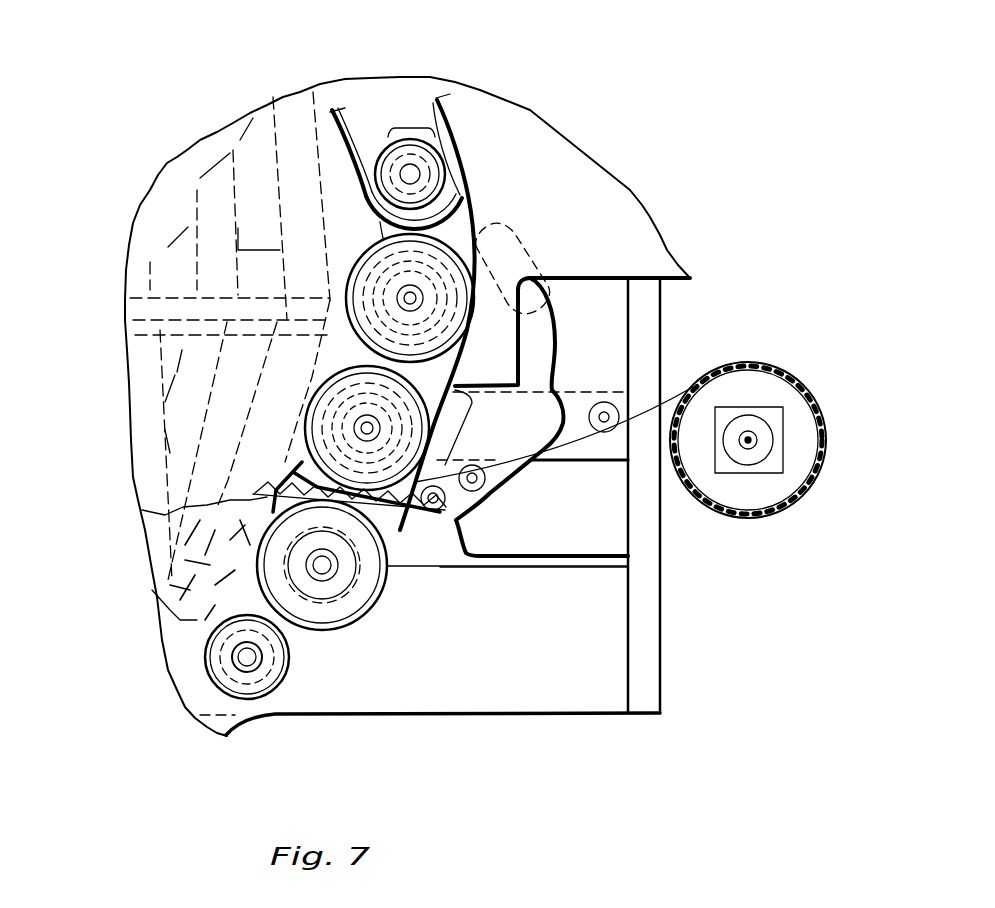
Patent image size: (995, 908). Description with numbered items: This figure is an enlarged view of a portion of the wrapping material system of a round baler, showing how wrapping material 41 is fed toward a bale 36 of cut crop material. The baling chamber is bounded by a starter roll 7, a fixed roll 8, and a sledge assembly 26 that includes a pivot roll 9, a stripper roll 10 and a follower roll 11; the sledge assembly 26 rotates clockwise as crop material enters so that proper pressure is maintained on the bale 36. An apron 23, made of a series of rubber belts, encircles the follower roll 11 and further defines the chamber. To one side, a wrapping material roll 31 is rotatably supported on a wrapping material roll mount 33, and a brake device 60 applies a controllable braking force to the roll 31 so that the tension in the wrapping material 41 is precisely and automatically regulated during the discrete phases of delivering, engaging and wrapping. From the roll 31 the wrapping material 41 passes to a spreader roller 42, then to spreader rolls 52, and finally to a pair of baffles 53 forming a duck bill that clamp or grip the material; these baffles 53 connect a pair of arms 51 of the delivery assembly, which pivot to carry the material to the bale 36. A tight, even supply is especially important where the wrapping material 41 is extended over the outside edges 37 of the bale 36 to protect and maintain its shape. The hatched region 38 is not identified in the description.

The starter roll 7 is at (291, 650).
The fixed roll 8 is at (385, 588).
The pivot roll 9 is at (420, 386).
The stripper roll 10 is at (450, 247).
The follower roll 11 is at (407, 140).
The apron 23 is at (350, 112).
The sledge assembly 26 is at (470, 237).
The wrapping material roll 31 is at (757, 513).
The wrapping material roll mount 33 is at (753, 440).
The bale 36 is at (140, 391).
The outside edges 37 is at (73, 502).
The hatched portion 38 is at (188, 605).
The wrapping material 41 is at (683, 388).
The spreader roller 42 is at (603, 433).
The arms 51 is at (563, 298).
The spreader rolls 52 is at (478, 492).
The baffles 53 is at (277, 500).
The brake device 60 is at (777, 457).